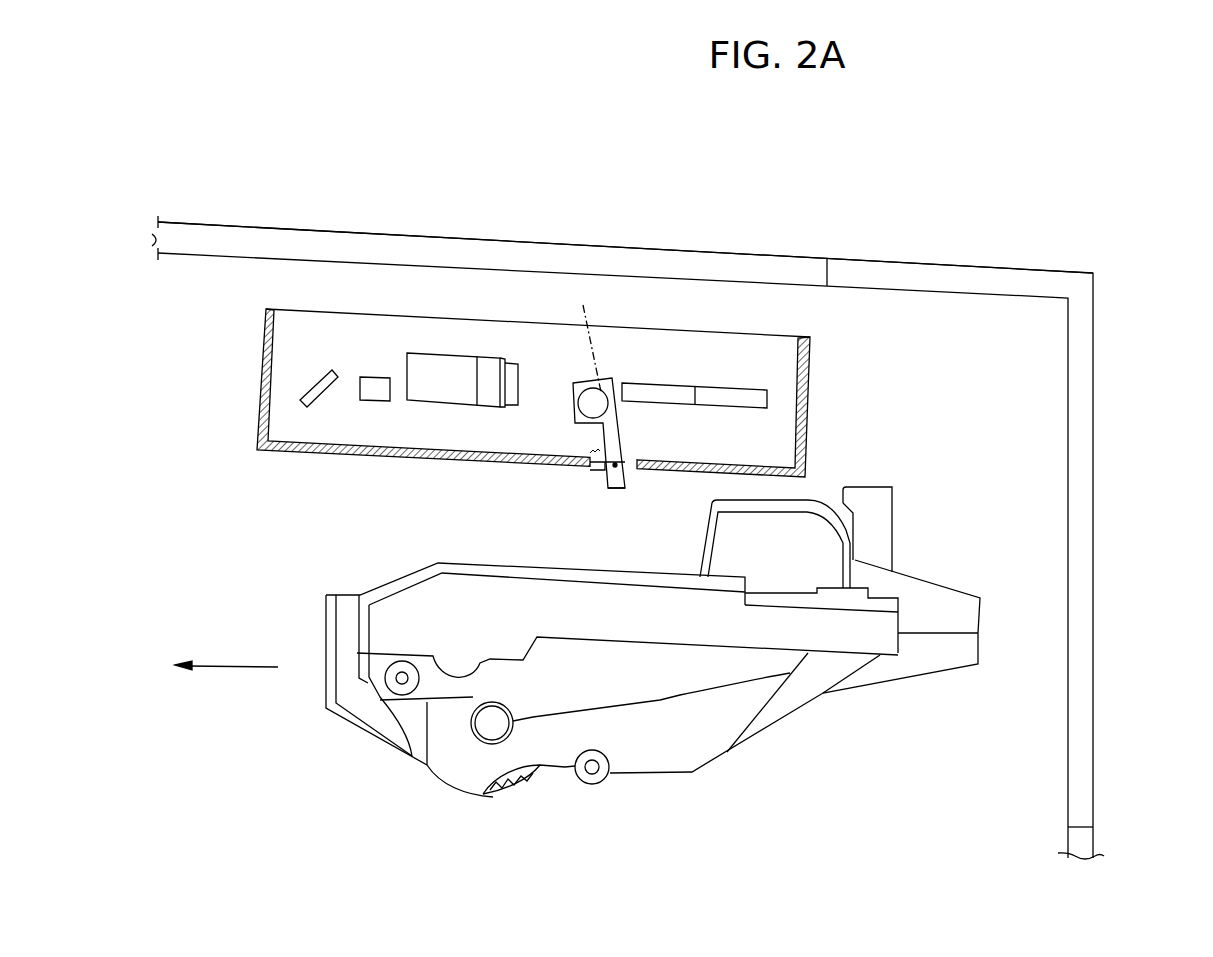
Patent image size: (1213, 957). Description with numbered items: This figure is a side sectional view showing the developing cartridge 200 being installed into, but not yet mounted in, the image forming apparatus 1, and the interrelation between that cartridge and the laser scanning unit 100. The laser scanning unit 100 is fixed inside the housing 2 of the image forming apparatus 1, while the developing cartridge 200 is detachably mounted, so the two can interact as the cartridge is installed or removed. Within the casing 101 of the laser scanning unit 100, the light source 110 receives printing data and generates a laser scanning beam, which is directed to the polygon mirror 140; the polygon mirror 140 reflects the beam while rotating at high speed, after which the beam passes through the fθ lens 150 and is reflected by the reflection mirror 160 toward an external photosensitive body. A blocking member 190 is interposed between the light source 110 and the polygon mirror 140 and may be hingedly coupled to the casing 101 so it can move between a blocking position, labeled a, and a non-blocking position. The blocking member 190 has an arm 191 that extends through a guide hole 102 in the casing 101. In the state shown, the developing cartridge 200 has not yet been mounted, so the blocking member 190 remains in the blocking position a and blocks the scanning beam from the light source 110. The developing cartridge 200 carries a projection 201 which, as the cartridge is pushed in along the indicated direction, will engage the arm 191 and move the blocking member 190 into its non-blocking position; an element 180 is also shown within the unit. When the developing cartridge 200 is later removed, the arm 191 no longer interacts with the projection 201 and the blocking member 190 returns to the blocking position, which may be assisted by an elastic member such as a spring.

The image forming apparatus 1 is at (1116, 179).
The housing 2 is at (1096, 398).
The laser scanning unit 100 is at (540, 371).
The casing 101 is at (811, 398).
The guide hole 102 is at (600, 469).
The light source 110 is at (580, 427).
The polygon mirror 140 is at (665, 383).
The fθ lens 150 is at (510, 362).
The reflection mirror 160 is at (302, 389).
The sensor 180 is at (380, 403).
The blocking member 190 is at (622, 432).
The arm 191 is at (620, 490).
The developing cartridge 200 is at (675, 641).
The projection 201 is at (894, 500).